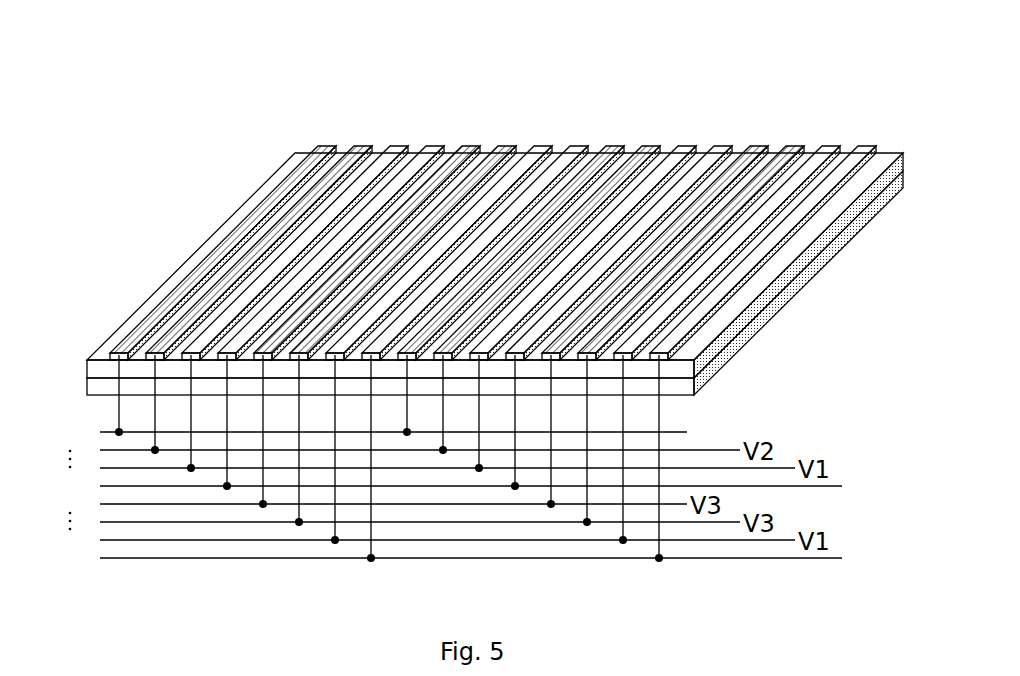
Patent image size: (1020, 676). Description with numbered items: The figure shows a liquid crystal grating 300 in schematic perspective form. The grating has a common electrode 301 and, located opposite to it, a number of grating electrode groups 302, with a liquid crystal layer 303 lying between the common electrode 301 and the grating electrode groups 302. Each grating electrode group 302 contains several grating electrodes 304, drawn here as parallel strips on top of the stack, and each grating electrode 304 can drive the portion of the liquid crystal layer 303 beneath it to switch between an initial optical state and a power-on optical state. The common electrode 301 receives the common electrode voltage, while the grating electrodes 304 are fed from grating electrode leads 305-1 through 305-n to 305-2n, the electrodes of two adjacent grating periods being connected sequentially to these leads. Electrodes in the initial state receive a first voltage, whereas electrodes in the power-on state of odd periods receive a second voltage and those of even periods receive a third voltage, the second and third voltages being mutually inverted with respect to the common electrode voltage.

The liquid crystal grating 300 is at (150, 82).
The common electrode 301 is at (833, 257).
The grating electrode group 302 is at (445, 135).
The liquid crystal layer 303 is at (757, 322).
The grating electrode 304 is at (742, 222).
The grating electrode lead 305-1 is at (373, 434).
The grating electrode lead 305-n is at (451, 488).
The grating electrode lead 305-2n is at (441, 560).